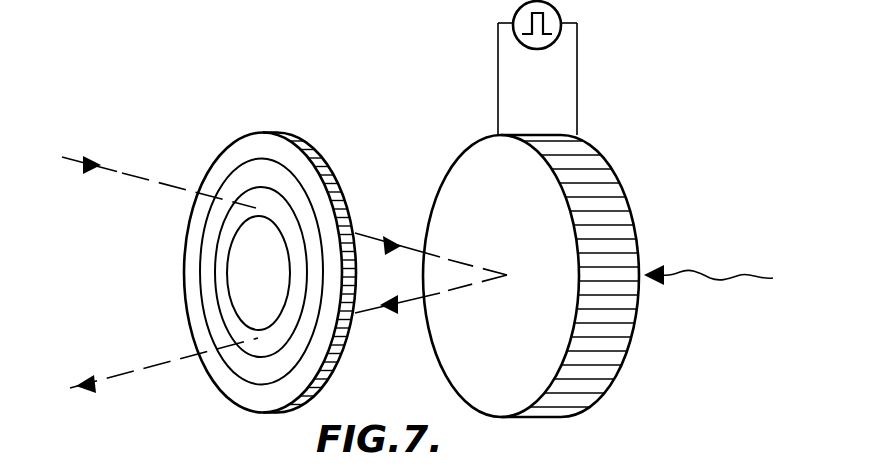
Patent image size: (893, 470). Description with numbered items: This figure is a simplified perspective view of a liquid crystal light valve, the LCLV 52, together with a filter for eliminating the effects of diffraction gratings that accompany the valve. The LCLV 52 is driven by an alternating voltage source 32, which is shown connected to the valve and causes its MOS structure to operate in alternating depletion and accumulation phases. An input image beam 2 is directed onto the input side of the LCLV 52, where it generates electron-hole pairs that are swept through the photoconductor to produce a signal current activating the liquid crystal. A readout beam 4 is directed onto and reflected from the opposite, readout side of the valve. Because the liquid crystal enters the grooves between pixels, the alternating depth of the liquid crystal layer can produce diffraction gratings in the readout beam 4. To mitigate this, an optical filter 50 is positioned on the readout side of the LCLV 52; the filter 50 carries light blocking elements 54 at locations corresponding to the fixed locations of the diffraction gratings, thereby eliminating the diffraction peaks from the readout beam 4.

The input image beam 2 is at (682, 273).
The readout beam 4 is at (128, 173).
The alternating voltage source 32 is at (561, 16).
The optical filter 50 is at (287, 135).
The LCLV 52 is at (627, 372).
The light blocking elements 54 is at (217, 298).